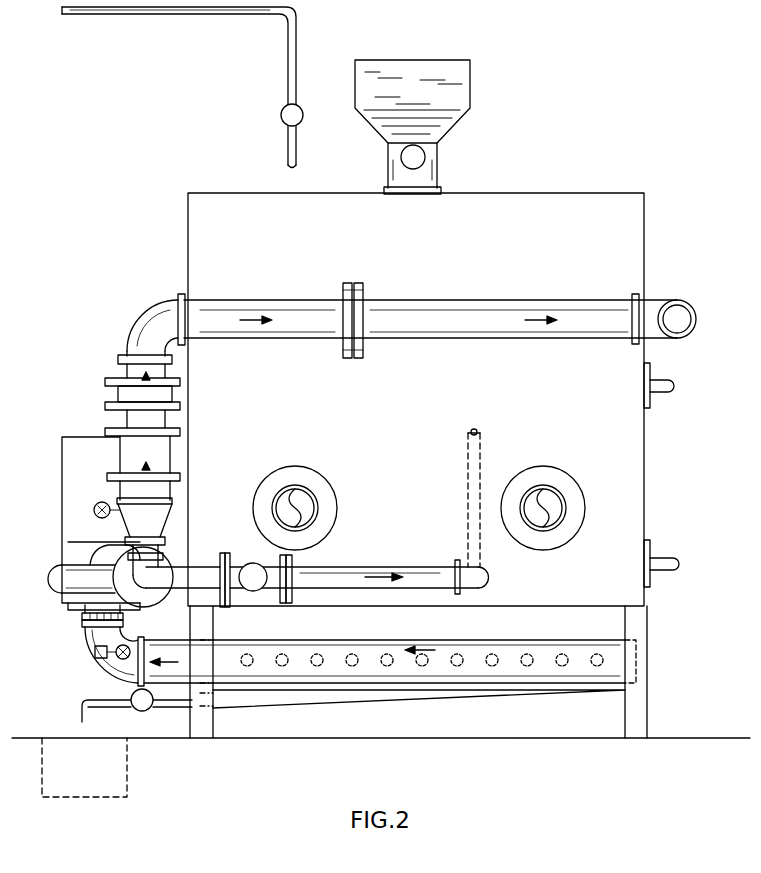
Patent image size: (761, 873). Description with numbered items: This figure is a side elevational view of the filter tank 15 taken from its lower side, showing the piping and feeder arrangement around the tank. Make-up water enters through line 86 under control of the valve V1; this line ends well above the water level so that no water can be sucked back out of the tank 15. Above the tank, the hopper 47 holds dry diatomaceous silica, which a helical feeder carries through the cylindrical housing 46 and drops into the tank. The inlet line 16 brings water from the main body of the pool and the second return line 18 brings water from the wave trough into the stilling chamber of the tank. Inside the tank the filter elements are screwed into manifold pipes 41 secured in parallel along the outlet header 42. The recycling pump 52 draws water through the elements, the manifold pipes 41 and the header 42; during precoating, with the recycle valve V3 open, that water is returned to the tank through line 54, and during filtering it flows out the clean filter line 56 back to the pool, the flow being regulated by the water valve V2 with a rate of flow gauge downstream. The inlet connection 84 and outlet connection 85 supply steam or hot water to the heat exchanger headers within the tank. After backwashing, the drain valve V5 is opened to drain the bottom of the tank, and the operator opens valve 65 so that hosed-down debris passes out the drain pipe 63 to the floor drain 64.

The tank 15 is at (555, 206).
The make-up water line 86 is at (292, 52).
The make-up water valve V1 is at (281, 116).
The hopper 47 is at (466, 74).
The cylindrical housing 46 is at (426, 158).
The clean filter line 56 is at (447, 318).
The water valve V2 is at (128, 396).
The recycling pump 52 is at (56, 583).
The recycling line 54 is at (370, 578).
The recycle valve V3 is at (253, 563).
The inlet line 16 is at (318, 503).
The second return line 18 is at (562, 493).
The inlet connection 84 is at (660, 393).
The outlet connection 85 is at (665, 557).
The outlet header 42 is at (575, 656).
The drain pipe 63 is at (187, 704).
The manifold pipes 41 is at (314, 652).
The valve 65 is at (132, 691).
The drain valve V5 is at (142, 712).
The floor drain 64 is at (128, 767).